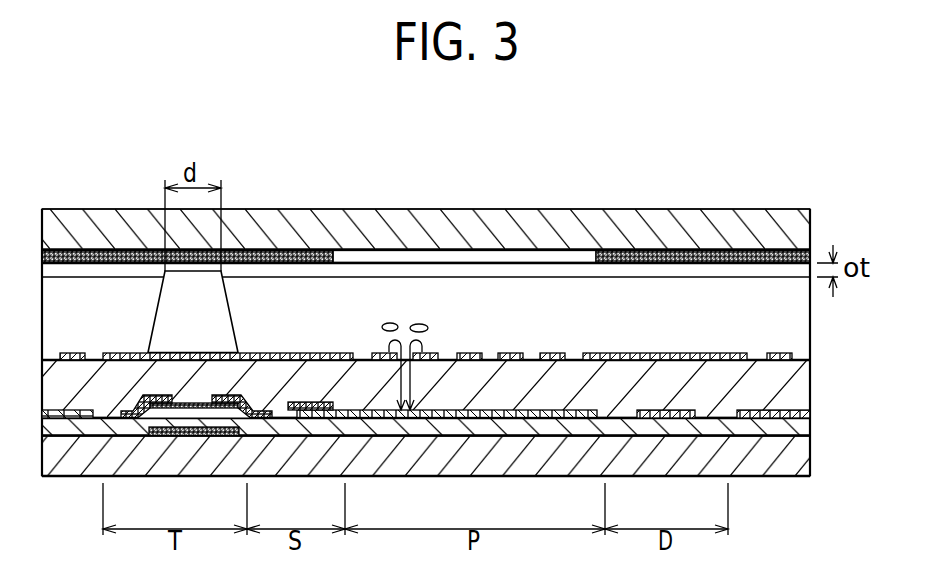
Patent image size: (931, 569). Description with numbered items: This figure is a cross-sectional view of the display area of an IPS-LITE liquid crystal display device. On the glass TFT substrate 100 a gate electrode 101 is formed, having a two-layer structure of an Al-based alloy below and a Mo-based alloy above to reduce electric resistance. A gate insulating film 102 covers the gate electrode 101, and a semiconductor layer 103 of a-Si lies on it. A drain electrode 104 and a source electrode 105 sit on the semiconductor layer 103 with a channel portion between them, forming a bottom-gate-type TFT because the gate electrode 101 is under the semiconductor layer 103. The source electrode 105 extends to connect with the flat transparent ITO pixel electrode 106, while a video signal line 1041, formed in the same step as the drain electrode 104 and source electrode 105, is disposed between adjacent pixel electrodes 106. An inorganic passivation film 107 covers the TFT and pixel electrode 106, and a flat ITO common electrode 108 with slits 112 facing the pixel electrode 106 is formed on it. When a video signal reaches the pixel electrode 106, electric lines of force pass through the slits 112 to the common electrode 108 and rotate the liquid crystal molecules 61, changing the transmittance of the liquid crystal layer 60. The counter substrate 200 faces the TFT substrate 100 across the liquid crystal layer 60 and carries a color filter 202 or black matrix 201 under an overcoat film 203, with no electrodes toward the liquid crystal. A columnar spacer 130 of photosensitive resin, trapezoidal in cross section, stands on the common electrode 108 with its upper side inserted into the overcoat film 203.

The TFT substrate 100 is at (800, 457).
The gate electrode 101 is at (197, 430).
The gate insulating film 102 is at (798, 426).
The semiconductor layer 103 is at (180, 408).
The drain electrode 104 is at (148, 390).
The video signal line 1041 is at (663, 412).
The source electrode 105 is at (262, 410).
The pixel electrode 106 is at (455, 412).
The inorganic passivation film 107 is at (800, 382).
The common electrode 108 is at (782, 352).
The slits 112 is at (490, 353).
The columnar spacer 130 is at (202, 297).
The counter substrate 200 is at (795, 225).
The black matrix 201 is at (297, 257).
The color filter 202 is at (402, 258).
The overcoat film 203 is at (513, 270).
The liquid crystal layer 60 is at (668, 303).
The liquid crystal molecules 61 is at (390, 322).